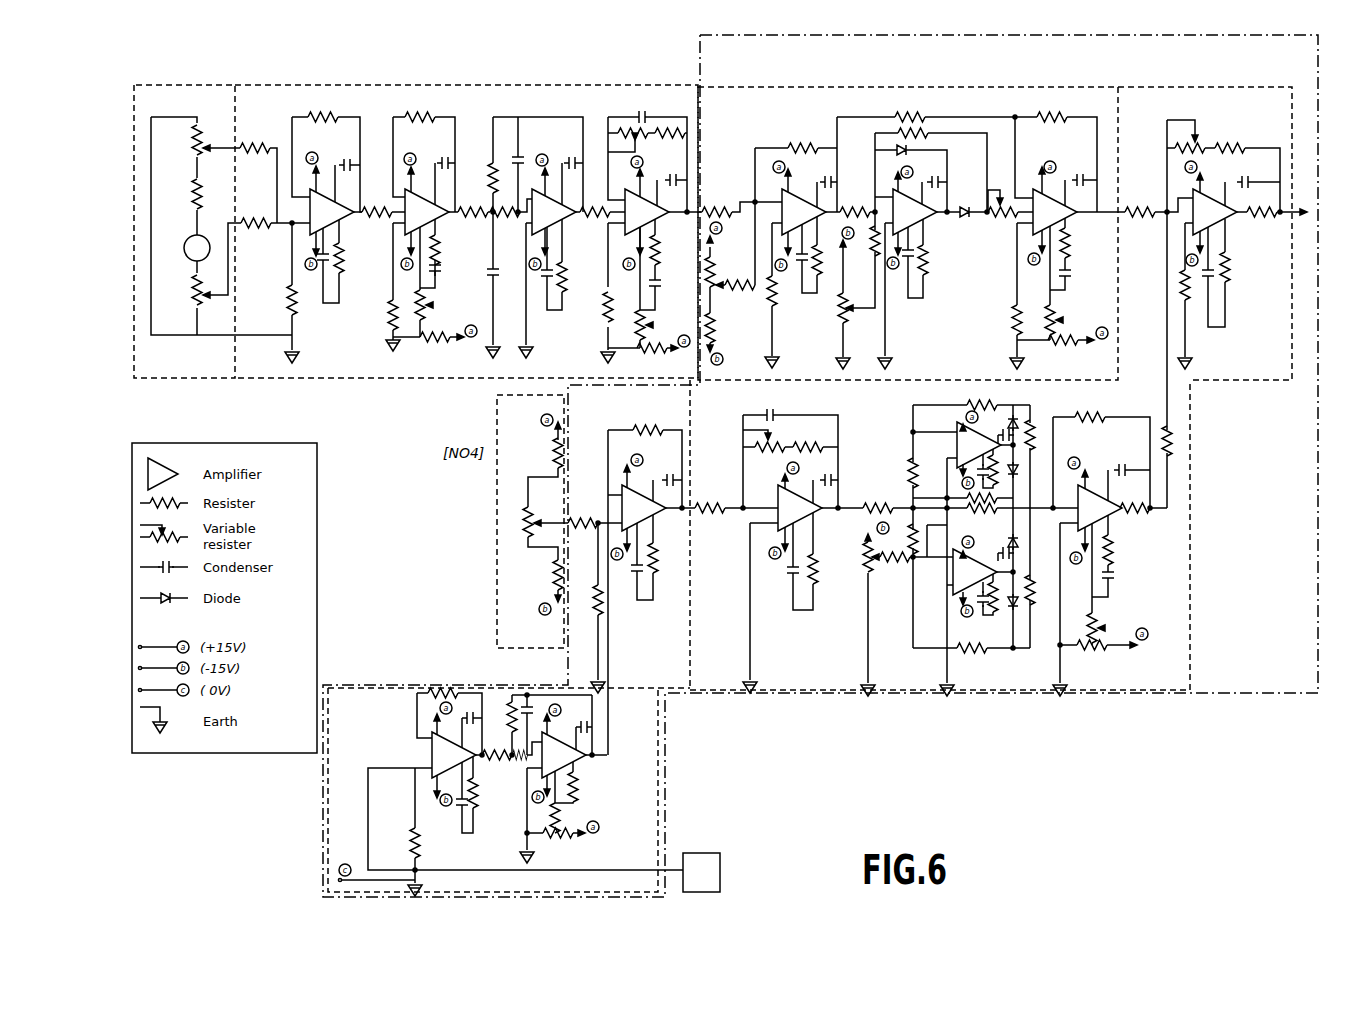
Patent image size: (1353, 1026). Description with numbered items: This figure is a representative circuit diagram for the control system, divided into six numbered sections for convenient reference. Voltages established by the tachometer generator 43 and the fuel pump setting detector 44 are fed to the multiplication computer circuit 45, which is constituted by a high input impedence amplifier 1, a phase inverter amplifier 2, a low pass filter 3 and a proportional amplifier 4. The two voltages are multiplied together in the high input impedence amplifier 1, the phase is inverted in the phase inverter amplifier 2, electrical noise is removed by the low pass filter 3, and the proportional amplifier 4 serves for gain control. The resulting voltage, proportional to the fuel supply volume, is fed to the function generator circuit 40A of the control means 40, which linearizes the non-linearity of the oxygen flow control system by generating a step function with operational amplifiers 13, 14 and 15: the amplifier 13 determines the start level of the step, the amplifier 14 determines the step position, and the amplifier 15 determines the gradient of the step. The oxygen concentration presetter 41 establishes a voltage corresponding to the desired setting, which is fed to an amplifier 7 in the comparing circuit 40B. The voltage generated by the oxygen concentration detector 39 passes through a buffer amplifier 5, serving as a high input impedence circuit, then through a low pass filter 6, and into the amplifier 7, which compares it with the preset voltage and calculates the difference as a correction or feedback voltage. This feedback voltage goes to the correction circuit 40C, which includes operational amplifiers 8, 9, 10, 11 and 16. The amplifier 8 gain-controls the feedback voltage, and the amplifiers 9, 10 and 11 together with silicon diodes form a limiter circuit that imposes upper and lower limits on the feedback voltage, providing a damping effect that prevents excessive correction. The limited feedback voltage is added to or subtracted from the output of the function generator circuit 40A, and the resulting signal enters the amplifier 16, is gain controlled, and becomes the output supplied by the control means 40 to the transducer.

The oxygen concentration detector 39 is at (722, 858).
The control means 40 is at (1273, 697).
The function generator circuit 40A is at (912, 94).
The comparing circuit 40B is at (660, 738).
The correction circuit 40C is at (1183, 498).
The oxygen concentration presetter 41 is at (521, 524).
The tachometer generator 43 is at (190, 258).
The fuel pump setting detector 44 is at (192, 134).
The multiplication computer circuit 45 is at (478, 87).
The high input impedence amplifier 1 is at (332, 212).
The phase inverter amplifier 2 is at (427, 212).
The low pass filter 3 is at (554, 212).
The proportional amplifier 4 is at (647, 212).
The buffer amplifier 5 is at (454, 755).
The low pass filter 6 is at (564, 755).
The amplifier 7 is at (644, 508).
The amplifier 8 is at (800, 508).
The operational amplifier 9 is at (979, 445).
The operational amplifier 10 is at (975, 572).
The operational amplifier 11 is at (1100, 508).
The operational amplifier 13 is at (804, 212).
The operational amplifier 14 is at (915, 212).
The operational amplifier 15 is at (1055, 212).
The amplifier 16 is at (1215, 212).